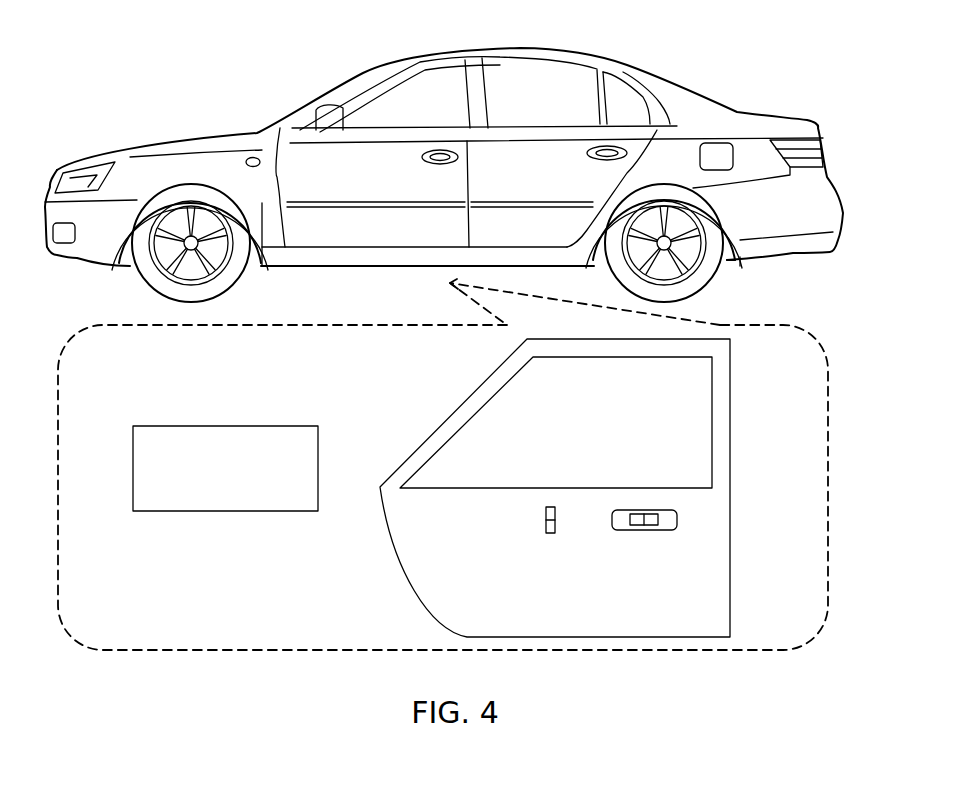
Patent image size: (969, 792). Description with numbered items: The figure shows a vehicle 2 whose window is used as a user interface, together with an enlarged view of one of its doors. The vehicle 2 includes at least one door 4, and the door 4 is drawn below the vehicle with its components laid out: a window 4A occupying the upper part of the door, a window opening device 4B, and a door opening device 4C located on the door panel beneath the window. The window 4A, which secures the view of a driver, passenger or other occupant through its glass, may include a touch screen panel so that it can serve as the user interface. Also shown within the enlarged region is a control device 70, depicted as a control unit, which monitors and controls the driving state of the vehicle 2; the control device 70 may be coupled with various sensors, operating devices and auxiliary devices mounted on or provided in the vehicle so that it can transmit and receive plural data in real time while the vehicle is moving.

The vehicle 2 is at (493, 46).
The door 4 is at (733, 445).
The window 4A is at (441, 493).
The window opening device 4B is at (549, 539).
The door opening device 4C is at (641, 536).
The control device 70 is at (226, 423).